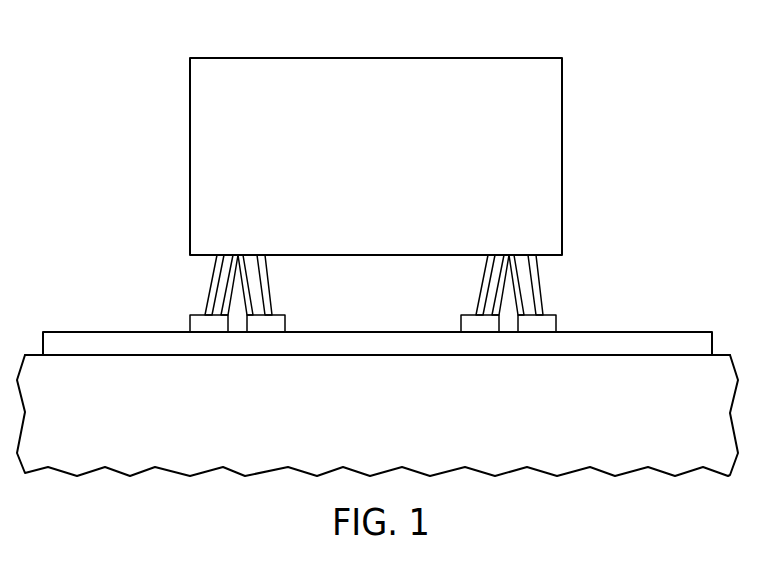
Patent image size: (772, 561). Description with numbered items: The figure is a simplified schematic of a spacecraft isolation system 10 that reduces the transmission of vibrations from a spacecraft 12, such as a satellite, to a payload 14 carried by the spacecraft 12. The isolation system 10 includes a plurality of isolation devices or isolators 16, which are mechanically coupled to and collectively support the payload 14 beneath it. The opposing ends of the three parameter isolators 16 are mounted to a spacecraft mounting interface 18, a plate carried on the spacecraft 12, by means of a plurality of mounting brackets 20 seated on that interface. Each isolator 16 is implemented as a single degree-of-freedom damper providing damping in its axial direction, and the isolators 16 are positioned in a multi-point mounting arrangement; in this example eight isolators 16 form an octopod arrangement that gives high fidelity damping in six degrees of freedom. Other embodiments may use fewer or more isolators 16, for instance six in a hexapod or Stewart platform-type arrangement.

The spacecraft isolation system 10 is at (339, 298).
The spacecraft 12 is at (237, 463).
The payload 14 is at (372, 68).
The isolators 16 is at (228, 277).
The spacecraft mounting interface 18 is at (65, 342).
The mounting brackets 20 is at (190, 322).